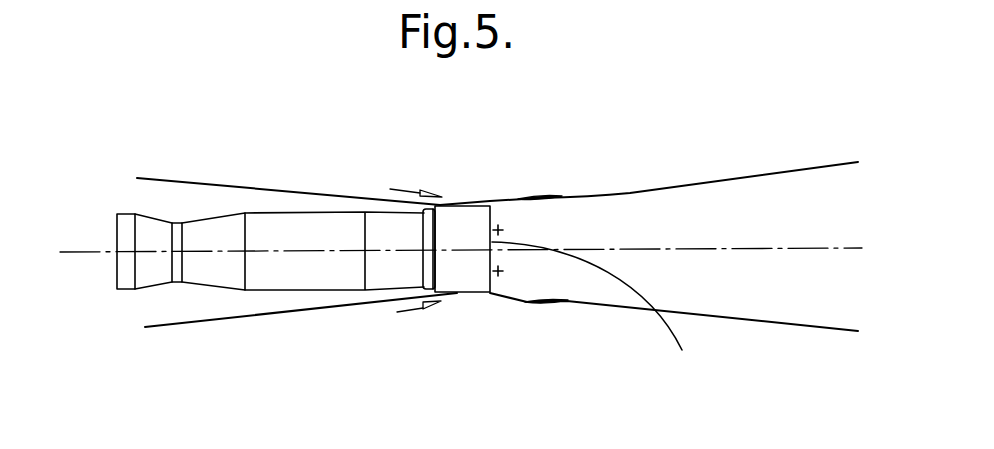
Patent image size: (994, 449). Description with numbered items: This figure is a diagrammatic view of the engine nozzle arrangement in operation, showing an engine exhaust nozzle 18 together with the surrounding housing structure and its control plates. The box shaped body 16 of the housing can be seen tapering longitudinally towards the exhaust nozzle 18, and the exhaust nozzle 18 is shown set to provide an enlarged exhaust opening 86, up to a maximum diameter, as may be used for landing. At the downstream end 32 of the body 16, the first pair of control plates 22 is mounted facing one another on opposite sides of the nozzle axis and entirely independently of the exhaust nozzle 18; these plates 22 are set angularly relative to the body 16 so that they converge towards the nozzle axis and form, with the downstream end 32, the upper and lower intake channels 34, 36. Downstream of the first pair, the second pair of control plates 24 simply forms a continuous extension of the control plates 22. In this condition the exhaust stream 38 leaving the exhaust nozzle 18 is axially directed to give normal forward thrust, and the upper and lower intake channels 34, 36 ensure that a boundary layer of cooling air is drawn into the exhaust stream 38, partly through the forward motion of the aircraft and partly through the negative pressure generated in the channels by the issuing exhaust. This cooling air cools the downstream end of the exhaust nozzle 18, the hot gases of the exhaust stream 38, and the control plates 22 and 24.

The box shaped body 16 is at (188, 178).
The downstream end 32 is at (373, 195).
The upper intake channel 34 is at (453, 195).
The lower intake channel 36 is at (468, 303).
The first pair of control plates 22 is at (477, 197).
The exhaust nozzle 18 is at (477, 228).
The second pair of control plates 24 is at (557, 193).
The exhaust stream 38 is at (727, 197).
The enlarged exhaust opening 86 is at (601, 319).